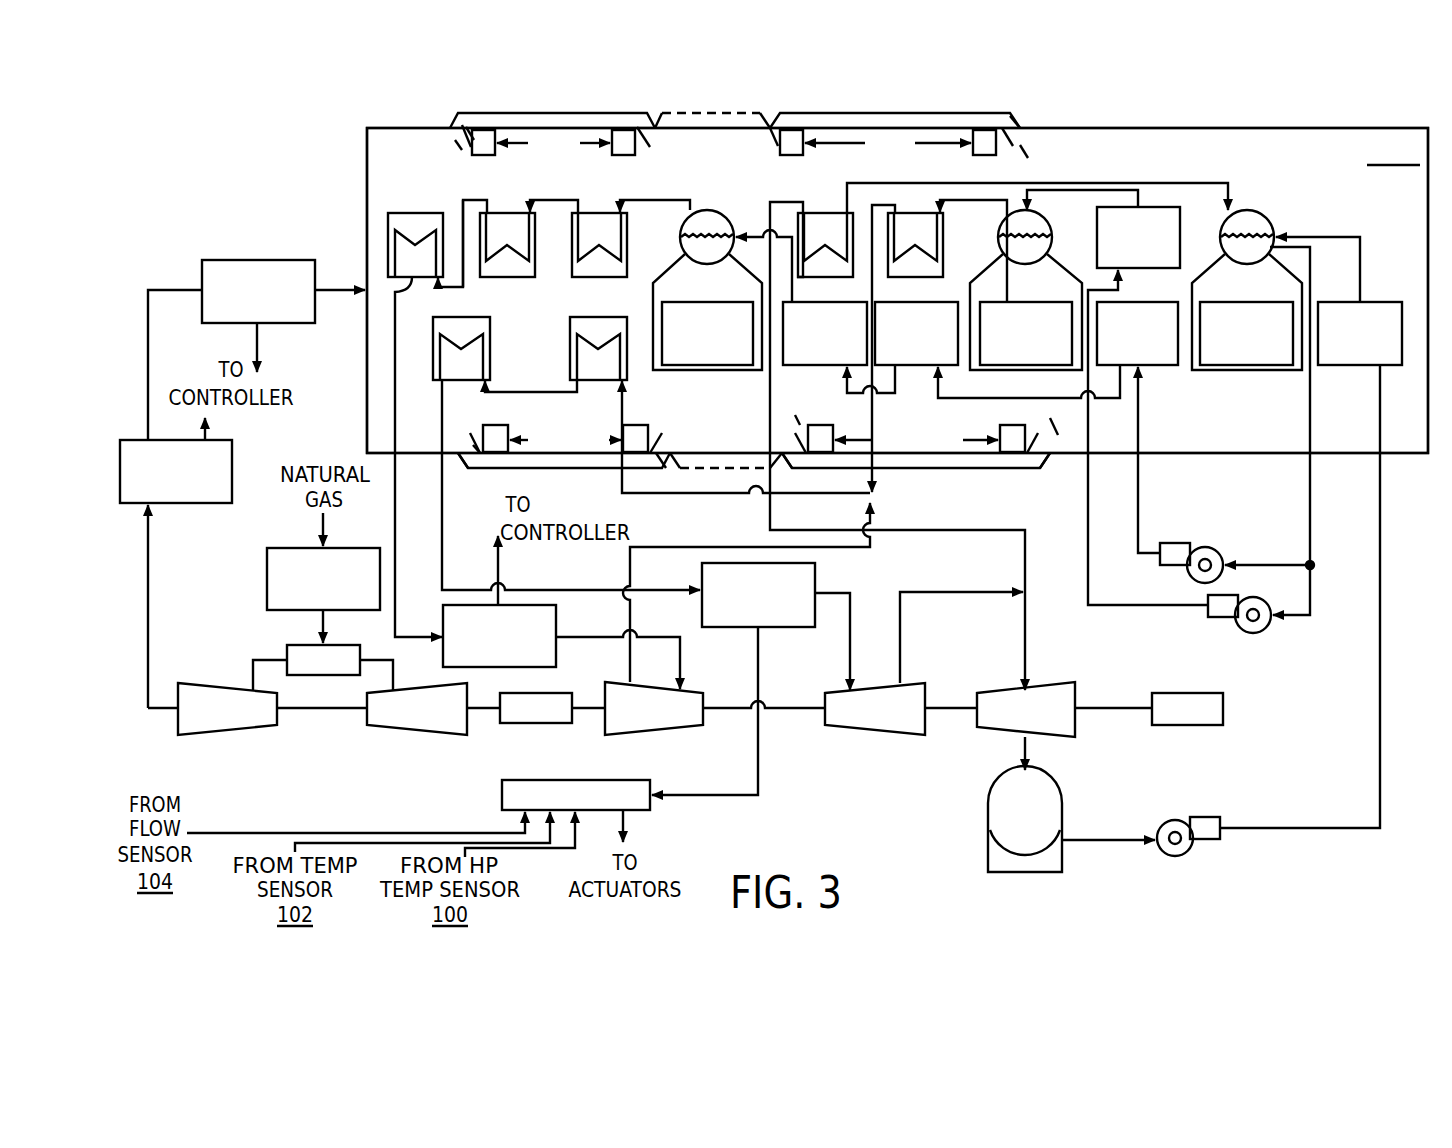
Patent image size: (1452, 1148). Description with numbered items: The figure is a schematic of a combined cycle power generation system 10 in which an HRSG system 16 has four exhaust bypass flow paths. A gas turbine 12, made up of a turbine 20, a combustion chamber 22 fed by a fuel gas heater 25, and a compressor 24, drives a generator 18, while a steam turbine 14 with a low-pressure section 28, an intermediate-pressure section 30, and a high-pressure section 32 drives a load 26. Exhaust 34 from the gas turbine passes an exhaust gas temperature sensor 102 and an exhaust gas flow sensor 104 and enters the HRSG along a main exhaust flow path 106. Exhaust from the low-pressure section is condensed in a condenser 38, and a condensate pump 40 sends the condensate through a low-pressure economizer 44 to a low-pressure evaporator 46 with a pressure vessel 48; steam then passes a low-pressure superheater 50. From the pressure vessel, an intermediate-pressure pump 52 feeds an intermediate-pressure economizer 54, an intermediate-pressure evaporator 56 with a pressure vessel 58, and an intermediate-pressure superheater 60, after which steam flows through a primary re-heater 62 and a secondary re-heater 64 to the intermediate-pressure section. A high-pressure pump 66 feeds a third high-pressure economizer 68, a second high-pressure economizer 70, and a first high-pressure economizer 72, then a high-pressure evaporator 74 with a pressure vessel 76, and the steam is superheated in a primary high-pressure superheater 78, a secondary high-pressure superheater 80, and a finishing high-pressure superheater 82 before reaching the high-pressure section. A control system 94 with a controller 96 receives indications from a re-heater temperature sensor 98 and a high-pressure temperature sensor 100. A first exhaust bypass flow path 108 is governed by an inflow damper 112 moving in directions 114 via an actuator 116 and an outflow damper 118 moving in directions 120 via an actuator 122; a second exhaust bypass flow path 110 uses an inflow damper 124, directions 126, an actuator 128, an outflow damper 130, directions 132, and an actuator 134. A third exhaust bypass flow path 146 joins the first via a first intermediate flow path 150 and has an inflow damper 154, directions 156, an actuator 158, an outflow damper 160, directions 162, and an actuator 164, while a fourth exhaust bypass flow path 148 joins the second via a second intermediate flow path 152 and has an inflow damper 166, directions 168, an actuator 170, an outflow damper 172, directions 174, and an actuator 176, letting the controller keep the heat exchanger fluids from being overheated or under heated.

The combined cycle power generation system 10 is at (1390, 124).
The gas turbine 12 is at (327, 767).
The steam turbine 14 is at (690, 738).
The HRSG system 16 is at (1292, 128).
The generator 18 is at (537, 723).
The turbine 20 is at (226, 735).
The combustion chamber 22 is at (298, 645).
The compressor 24 is at (418, 735).
The fuel gas heater 25 is at (267, 592).
The load 26 is at (1186, 693).
The low-pressure section 28 is at (996, 692).
The intermediate-pressure section 30 is at (882, 735).
The high-pressure section 32 is at (652, 735).
The exhaust 34 is at (333, 287).
The condenser 38 is at (1055, 777).
The condensate pump 40 is at (1162, 822).
The low-pressure economizer 44 is at (1372, 302).
The low-pressure evaporator 46 is at (1208, 372).
The pressure vessel 48 is at (1256, 212).
The low-pressure superheater 50 is at (828, 200).
The intermediate-pressure pump 52 is at (1268, 628).
The intermediate-pressure economizer 54 is at (1160, 207).
The intermediate-pressure evaporator 56 is at (1022, 372).
The pressure vessel 58 is at (1050, 217).
The intermediate-pressure superheater 60 is at (943, 246).
The primary re-heater 62 is at (570, 352).
The secondary re-heater 64 is at (492, 350).
The high-pressure pump 66 is at (1182, 542).
The third high-pressure economizer 68 is at (1133, 302).
The second high-pressure economizer 70 is at (945, 300).
The first high-pressure economizer 72 is at (830, 302).
The high-pressure evaporator 74 is at (657, 302).
The pressure vessel 76 is at (707, 210).
The primary high-pressure superheater 78 is at (600, 280).
The secondary high-pressure superheater 80 is at (508, 280).
The finishing high-pressure superheater 82 is at (412, 280).
The control system 94 is at (680, 822).
The controller 96 is at (502, 794).
The re-heater temperature sensor 98 is at (790, 628).
The high-pressure temperature sensor 100 is at (556, 652).
The exhaust gas temperature sensor 102 is at (233, 468).
The exhaust gas flow sensor 104 is at (257, 260).
The main exhaust flow path 106 is at (472, 247).
The first exhaust bypass flow path 108 is at (553, 112).
The second exhaust bypass flow path 110 is at (568, 463).
The inflow damper 112 is at (452, 126).
The directions 114 is at (458, 166).
The actuator 116 is at (476, 124).
The outflow damper 118 is at (655, 122).
The directions 120 is at (662, 145).
The actuator 122 is at (625, 124).
The inflow damper 124 is at (470, 466).
The directions 126 is at (465, 413).
The actuator 128 is at (500, 425).
The outflow damper 130 is at (657, 468).
The directions 132 is at (680, 432).
The actuator 134 is at (625, 455).
The third exhaust bypass flow path 146 is at (916, 114).
The fourth exhaust bypass flow path 148 is at (925, 463).
The first intermediate flow path 150 is at (720, 118).
The second intermediate flow path 152 is at (718, 468).
The inflow damper 154 is at (780, 124).
The directions 156 is at (752, 148).
The actuator 158 is at (792, 160).
The outflow damper 160 is at (1022, 130).
The directions 162 is at (1010, 168).
The actuator 164 is at (992, 125).
The inflow damper 166 is at (808, 458).
The directions 168 is at (780, 435).
The actuator 170 is at (825, 458).
The outflow damper 172 is at (1038, 458).
The directions 174 is at (1040, 412).
The actuator 176 is at (1010, 460).